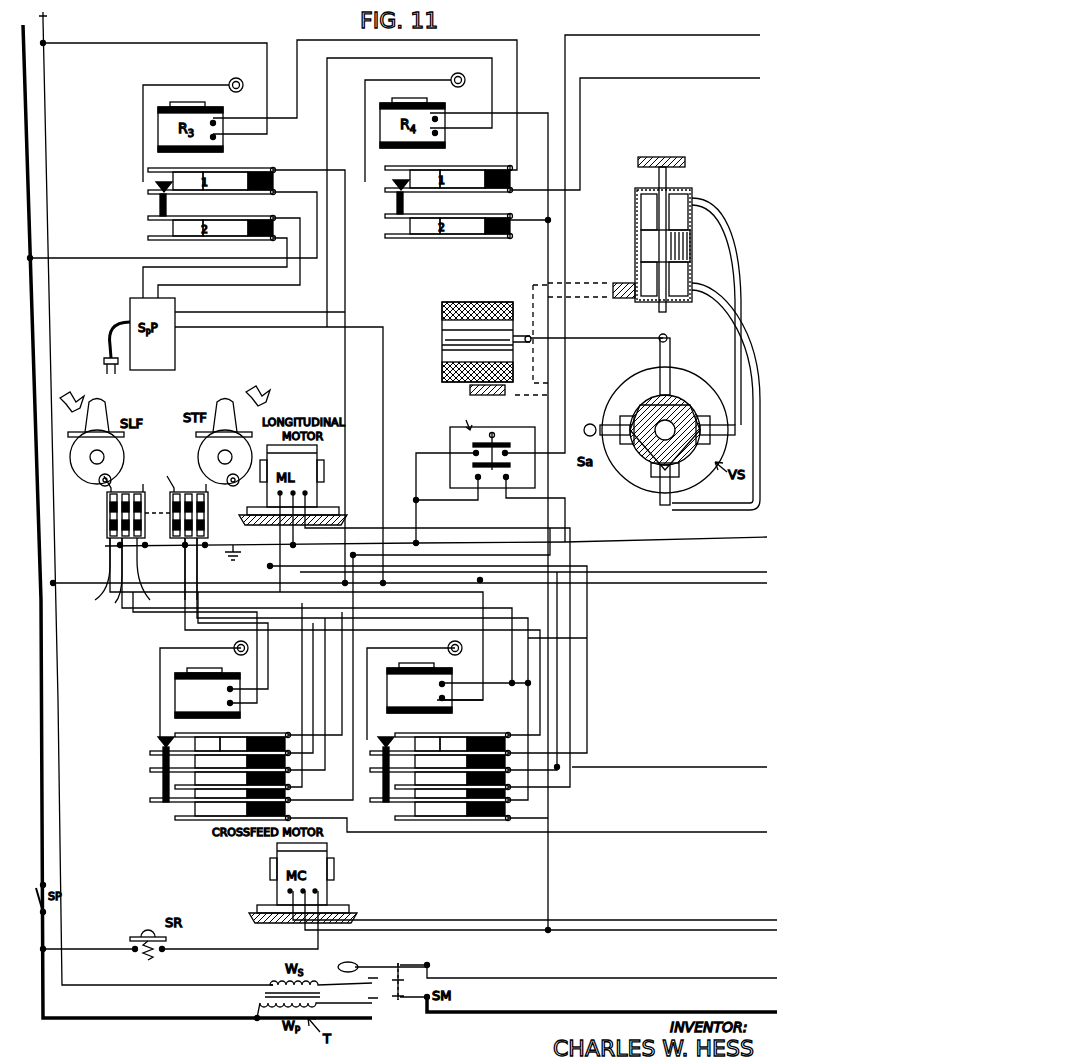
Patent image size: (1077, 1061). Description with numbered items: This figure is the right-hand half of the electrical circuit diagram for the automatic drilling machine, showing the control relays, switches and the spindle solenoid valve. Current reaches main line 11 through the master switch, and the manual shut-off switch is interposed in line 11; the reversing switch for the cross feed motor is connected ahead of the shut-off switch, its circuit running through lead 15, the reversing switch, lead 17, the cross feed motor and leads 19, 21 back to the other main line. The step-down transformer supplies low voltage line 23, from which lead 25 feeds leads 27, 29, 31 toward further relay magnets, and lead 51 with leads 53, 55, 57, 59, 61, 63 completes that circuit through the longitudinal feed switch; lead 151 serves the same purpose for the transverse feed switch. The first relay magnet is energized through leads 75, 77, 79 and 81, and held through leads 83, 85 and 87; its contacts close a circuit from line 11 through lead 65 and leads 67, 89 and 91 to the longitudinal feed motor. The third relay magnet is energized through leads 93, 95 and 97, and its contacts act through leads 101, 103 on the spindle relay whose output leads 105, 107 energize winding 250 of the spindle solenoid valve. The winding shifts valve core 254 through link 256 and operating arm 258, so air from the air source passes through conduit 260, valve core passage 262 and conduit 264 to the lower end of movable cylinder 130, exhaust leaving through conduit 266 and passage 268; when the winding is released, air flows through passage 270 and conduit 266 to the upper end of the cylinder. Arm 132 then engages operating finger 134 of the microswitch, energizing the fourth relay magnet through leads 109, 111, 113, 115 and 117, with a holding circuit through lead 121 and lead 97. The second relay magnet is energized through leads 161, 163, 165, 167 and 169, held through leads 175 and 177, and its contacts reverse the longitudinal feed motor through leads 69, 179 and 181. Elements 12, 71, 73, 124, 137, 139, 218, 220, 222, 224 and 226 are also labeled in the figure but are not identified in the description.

The main line 11 is at (42, 630).
The switch contact stack 12 is at (135, 492).
The lead 15 is at (96, 949).
The lead 17 is at (250, 949).
The lead 19 is at (472, 930).
The lead 21 is at (635, 928).
The low voltage line 23 is at (56, 668).
The lead 25 is at (85, 583).
The lead 27 is at (350, 555).
The lead 29 is at (446, 592).
The lead 31 is at (516, 585).
The lead 51 is at (406, 590).
The lead 53 is at (151, 577).
The lead 55 is at (113, 576).
The lead 57 is at (185, 575).
The lead 59 is at (222, 545).
The lead 61 is at (345, 528).
The lead 63 is at (486, 542).
The lead 65 is at (85, 258).
The lead 67 is at (300, 170).
The lead 69 is at (530, 540).
The conductor 71 is at (644, 767).
The conductor 73 is at (387, 920).
The lead 75 is at (258, 632).
The lead 77 is at (266, 656).
The lead 79 is at (218, 552).
The lead 81 is at (94, 576).
The lead 83 is at (292, 566).
The lead 85 is at (528, 714).
The lead 87 is at (456, 832).
The lead 89 is at (356, 600).
The lead 91 is at (296, 672).
The lead 93 is at (215, 43).
The lead 95 is at (297, 86).
The lead 97 is at (668, 78).
The lead 101 is at (208, 270).
The lead 103 is at (220, 286).
The output lead 105 is at (272, 312).
The output lead 107 is at (273, 322).
The lead 109 is at (383, 425).
The lead 111 is at (548, 132).
The lead 113 is at (548, 240).
The lead 115 is at (432, 500).
The lead 117 is at (418, 518).
The lead 121 is at (540, 218).
The hydraulic cylinder 124 is at (640, 212).
The movable cylinder 130 is at (635, 276).
The arm 132 is at (472, 395).
The operating finger 134 is at (492, 430).
The conductor 137 is at (658, 40).
The conductor 139 is at (435, 447).
The lead 151 is at (296, 619).
The lead 161 is at (480, 663).
The lead 163 is at (497, 681).
The lead 165 is at (514, 687).
The lead 167 is at (587, 638).
The lead 169 is at (203, 622).
The lead 175 is at (540, 802).
The lead 177 is at (548, 875).
The lead 179 is at (565, 770).
The lead 181 is at (566, 788).
The switch handle 218 is at (103, 405).
The switch handle 220 is at (226, 398).
The plug cable 222 is at (65, 390).
The indicator 224 is at (255, 392).
The indicator lamp 226 is at (175, 390).
The winding 250 is at (478, 292).
The valve core 254 is at (700, 470).
The link 256 is at (618, 340).
The operating arm 258 is at (660, 353).
The conduit 260 is at (612, 420).
The valve core passage 262 is at (640, 460).
The conduit 264 is at (741, 338).
The conduit 266 is at (753, 358).
The passage 268 is at (660, 395).
The passage 270 is at (640, 410).